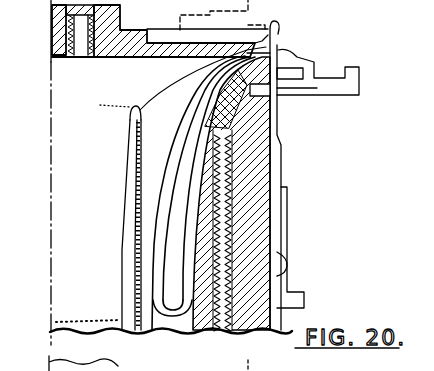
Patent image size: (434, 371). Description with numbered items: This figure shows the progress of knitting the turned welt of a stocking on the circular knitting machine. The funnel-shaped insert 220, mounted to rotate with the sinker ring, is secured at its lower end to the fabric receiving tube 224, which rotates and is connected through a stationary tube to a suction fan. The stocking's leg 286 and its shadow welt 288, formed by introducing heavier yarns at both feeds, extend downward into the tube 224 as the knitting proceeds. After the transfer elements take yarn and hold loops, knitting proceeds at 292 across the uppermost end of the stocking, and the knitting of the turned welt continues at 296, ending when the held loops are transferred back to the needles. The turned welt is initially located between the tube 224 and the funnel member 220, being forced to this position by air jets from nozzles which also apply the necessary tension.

The funnel-shaped insert 220 is at (191, 309).
The fabric receiving tube 224 is at (137, 163).
The leg 286 is at (121, 295).
The shadow welt 288 is at (176, 82).
The knitting of the turned welt across the uppermost end 292 is at (188, 113).
The continued knitting of the turned welt 296 is at (196, 150).